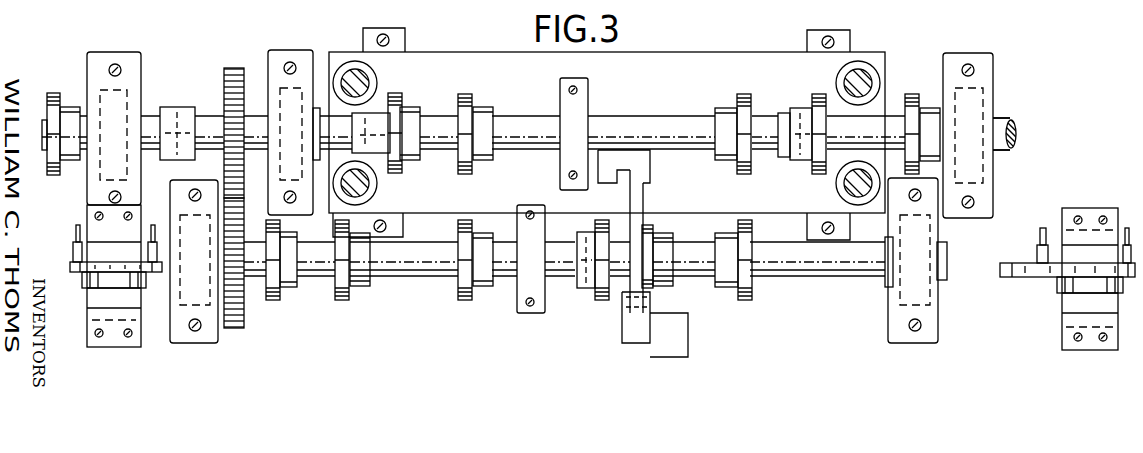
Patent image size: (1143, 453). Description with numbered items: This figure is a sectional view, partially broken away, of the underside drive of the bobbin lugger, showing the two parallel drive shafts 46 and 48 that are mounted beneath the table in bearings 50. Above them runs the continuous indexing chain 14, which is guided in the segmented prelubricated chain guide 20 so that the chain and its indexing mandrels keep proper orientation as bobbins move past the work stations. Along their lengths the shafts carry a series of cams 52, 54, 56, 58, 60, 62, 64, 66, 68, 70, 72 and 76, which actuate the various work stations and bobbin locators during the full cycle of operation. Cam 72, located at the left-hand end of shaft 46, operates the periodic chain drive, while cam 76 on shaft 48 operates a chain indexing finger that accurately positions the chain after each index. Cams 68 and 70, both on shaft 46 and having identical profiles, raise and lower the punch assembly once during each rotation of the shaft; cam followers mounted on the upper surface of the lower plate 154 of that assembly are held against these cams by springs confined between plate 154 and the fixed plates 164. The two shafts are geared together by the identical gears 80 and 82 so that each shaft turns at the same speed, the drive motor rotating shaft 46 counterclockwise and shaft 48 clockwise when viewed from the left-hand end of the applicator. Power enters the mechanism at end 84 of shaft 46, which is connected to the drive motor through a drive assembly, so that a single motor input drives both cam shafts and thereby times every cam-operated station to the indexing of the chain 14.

The indexing chain 14 is at (1032, 280).
The chain guide 20 is at (384, 26).
The drive shaft 46 is at (643, 124).
The drive shaft 48 is at (798, 266).
The bearings 50 is at (131, 55).
The cam 52 is at (910, 95).
The cam 54 is at (742, 95).
The cam 56 is at (466, 95).
The cam 58 is at (272, 300).
The cam 60 is at (466, 300).
The cam 62 is at (600, 300).
The cam 64 is at (655, 288).
The cam 66 is at (742, 298).
The cam 68 is at (395, 93).
The cam 70 is at (812, 95).
The cam 72 is at (54, 92).
The cam 76 is at (343, 300).
The gear 80 is at (232, 68).
The gear 82 is at (232, 328).
The end of shaft 84 is at (1010, 125).
The lower plate 154 is at (533, 80).
The fixed plates 164 is at (848, 47).